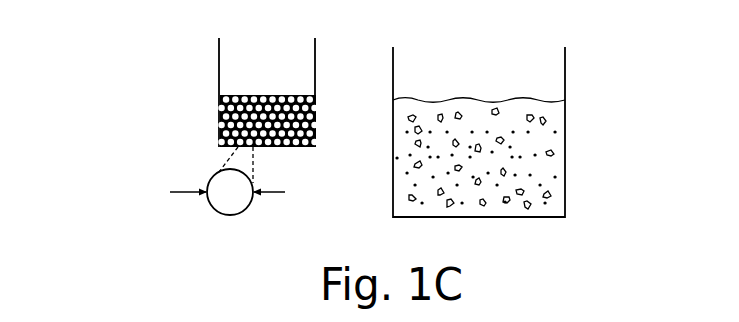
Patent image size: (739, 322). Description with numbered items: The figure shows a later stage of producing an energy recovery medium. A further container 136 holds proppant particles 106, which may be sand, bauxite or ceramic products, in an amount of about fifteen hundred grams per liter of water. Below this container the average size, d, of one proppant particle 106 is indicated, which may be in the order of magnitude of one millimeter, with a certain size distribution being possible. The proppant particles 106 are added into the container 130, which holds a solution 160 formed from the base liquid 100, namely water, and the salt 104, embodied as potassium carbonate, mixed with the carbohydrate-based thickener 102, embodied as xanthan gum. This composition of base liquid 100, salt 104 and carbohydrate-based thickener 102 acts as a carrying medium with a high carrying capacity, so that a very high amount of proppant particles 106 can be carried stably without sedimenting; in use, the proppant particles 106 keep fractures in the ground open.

The container 136 is at (219, 58).
The proppant particles 106 is at (219, 129).
The solution 160 is at (531, 82).
The salt 104 is at (433, 190).
The carbohydrate-based thickener 102 is at (556, 133).
The base liquid 100 is at (553, 165).
The container 130 is at (393, 212).